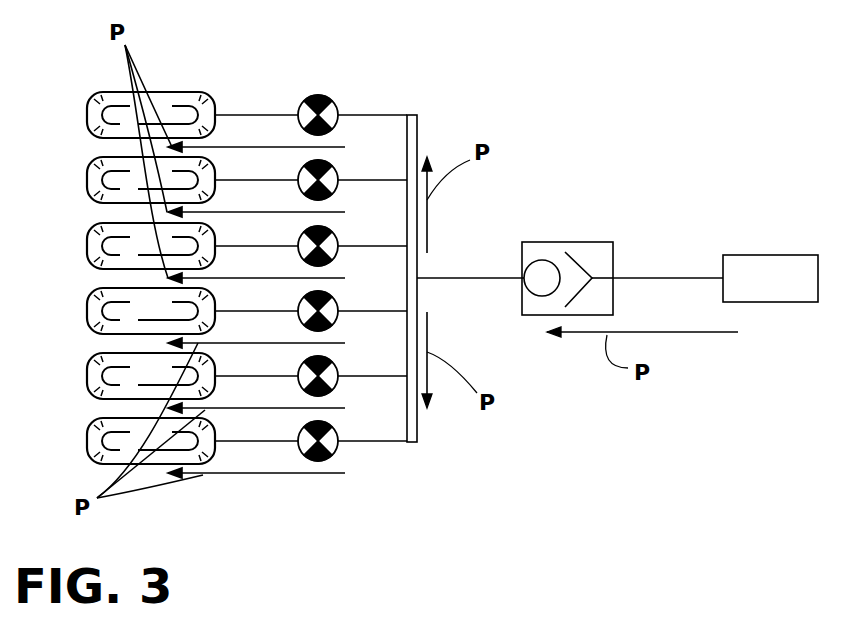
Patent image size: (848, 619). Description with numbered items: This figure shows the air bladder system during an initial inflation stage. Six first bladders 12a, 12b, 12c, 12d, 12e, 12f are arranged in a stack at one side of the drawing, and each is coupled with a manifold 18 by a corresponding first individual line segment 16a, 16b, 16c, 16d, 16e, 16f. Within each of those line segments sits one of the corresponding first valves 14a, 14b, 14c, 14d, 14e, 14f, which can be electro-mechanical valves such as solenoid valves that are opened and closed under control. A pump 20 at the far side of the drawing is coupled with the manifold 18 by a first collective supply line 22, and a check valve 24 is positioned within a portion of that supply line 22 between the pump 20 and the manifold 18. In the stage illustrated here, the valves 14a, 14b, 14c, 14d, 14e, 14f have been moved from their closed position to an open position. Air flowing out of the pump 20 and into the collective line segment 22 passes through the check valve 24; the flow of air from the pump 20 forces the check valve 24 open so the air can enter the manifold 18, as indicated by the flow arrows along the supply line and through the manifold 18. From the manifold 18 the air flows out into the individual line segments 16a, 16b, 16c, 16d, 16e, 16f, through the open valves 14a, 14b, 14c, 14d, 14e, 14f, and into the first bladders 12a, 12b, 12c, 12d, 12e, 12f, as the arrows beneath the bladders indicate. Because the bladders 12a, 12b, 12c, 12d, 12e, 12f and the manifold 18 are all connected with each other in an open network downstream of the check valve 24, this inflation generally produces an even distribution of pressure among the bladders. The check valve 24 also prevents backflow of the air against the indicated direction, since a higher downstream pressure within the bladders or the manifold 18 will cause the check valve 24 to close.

The first bladder 12a is at (87, 123).
The first bladder 12b is at (87, 188).
The first bladder 12c is at (87, 254).
The first bladder 12d is at (87, 319).
The first bladder 12e is at (87, 384).
The first bladder 12f is at (87, 449).
The first valve 14a is at (334, 111).
The first valve 14b is at (334, 176).
The first valve 14c is at (334, 242).
The first valve 14d is at (334, 307).
The first valve 14e is at (334, 372).
The first valve 14f is at (334, 437).
The first individual line segment 16a is at (243, 114).
The first individual line segment 16b is at (235, 179).
The first individual line segment 16c is at (232, 245).
The first individual line segment 16d is at (232, 310).
The first individual line segment 16e is at (232, 375).
The first individual line segment 16f is at (232, 440).
The manifold 18 is at (417, 145).
The pump 20 is at (770, 255).
The first collective supply line 22 is at (455, 277).
The check valve 24 is at (572, 242).